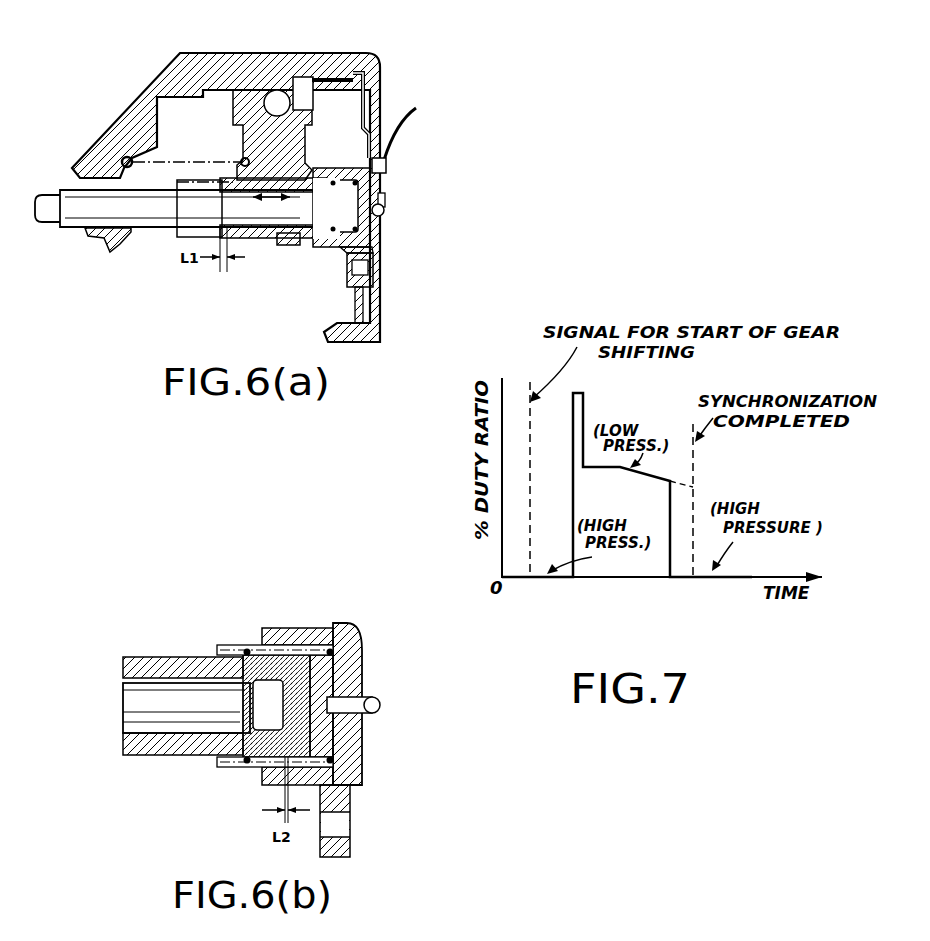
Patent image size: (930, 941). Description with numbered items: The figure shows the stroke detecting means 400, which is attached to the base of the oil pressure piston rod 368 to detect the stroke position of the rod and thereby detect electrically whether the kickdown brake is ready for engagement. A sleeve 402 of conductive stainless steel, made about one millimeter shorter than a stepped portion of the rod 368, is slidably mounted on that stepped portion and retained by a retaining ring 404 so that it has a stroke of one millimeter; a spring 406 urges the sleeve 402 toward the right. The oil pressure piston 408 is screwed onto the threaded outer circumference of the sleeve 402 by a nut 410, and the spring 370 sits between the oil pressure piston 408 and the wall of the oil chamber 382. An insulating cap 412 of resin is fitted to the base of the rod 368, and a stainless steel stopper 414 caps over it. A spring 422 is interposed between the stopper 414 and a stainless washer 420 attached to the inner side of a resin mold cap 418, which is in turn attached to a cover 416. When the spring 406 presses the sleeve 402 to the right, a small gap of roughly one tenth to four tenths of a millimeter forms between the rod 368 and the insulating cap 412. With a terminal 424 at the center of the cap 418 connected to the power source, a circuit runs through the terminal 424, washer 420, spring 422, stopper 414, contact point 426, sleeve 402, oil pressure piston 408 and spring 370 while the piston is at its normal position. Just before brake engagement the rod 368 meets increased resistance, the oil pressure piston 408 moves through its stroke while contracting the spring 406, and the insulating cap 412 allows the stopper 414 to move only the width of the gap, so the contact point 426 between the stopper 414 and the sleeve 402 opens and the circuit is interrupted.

In FIG. 6A, the oil pressure piston rod 368 is at (80, 218).
In FIG. 6B, the oil pressure piston rod 368 is at (172, 705).
In FIG. 6A, the spring 370 is at (126, 157).
In FIG. 6A, the oil chamber 382 is at (188, 108).
In FIG. 6A, the stroke detecting means 400 is at (410, 95).
In FIG. 6B, the stroke detecting means 400 is at (408, 676).
In FIG. 6A, the sleeve 402 is at (260, 239).
In FIG. 6B, the sleeve 402 is at (153, 668).
In FIG. 6A, the retaining ring 404 is at (316, 234).
In FIG. 6B, the retaining ring 404 is at (243, 678).
In FIG. 6A, the spring 406 is at (180, 236).
In FIG. 6A, the oil pressure piston 408 is at (254, 88).
In FIG. 6A, the nut 410 is at (294, 245).
In FIG. 6A, the insulating cap 412 is at (356, 222).
In FIG. 6B, the insulating cap 412 is at (340, 758).
In FIG. 6B, the stopper 414 is at (330, 682).
In FIG. 6A, the cover 416 is at (362, 96).
In FIG. 6A, the resin mold cap 418 is at (386, 200).
In FIG. 6B, the resin mold cap 418 is at (343, 735).
In FIG. 6B, the washer 420 is at (338, 657).
In FIG. 6A, the spring 422 is at (386, 164).
In FIG. 6B, the spring 422 is at (333, 645).
In FIG. 6A, the terminal 424 is at (385, 209).
In FIG. 6B, the terminal 424 is at (380, 708).
In FIG. 6B, the contact point 426 is at (247, 668).